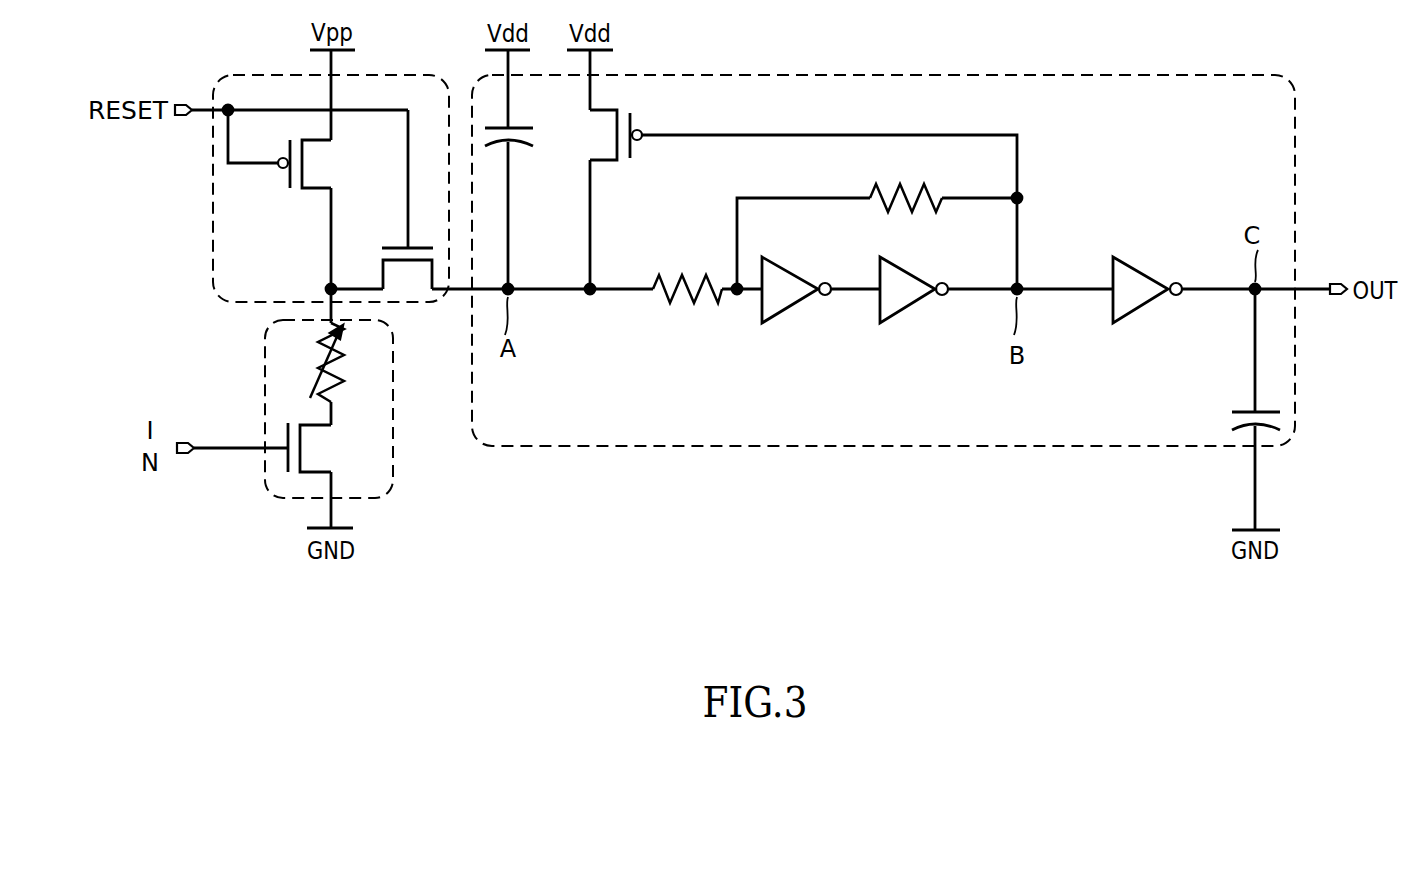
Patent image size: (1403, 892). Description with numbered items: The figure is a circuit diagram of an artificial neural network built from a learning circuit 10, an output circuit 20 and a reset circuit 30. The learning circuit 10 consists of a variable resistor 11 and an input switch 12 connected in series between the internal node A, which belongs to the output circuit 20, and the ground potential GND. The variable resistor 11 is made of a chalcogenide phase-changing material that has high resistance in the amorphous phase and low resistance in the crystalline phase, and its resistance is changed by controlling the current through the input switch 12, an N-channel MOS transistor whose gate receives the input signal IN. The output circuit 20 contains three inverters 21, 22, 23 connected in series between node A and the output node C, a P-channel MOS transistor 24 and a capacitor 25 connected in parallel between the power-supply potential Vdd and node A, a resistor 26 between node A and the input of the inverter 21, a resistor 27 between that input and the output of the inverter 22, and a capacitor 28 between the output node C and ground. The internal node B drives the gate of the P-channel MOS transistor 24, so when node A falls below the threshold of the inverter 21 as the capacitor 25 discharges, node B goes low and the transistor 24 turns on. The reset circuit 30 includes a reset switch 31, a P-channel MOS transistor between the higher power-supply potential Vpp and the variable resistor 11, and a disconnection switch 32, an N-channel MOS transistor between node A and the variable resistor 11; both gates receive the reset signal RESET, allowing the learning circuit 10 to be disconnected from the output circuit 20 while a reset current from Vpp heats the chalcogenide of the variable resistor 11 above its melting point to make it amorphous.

The learning circuit 10 is at (393, 448).
The variable resistor 11 is at (338, 377).
The input switch 12 is at (316, 471).
The output circuit 20 is at (1054, 49).
The inverter 21 is at (785, 316).
The inverter 22 is at (898, 316).
The inverter 23 is at (1135, 320).
The P-channel MOS transistor 24 is at (604, 162).
The capacitor 25 is at (518, 142).
The resistor 26 is at (675, 300).
The resistor 27 is at (912, 212).
The capacitor 28 is at (1250, 410).
The reset circuit 30 is at (384, 73).
The reset switch 31 is at (320, 142).
The disconnection switch 32 is at (383, 285).